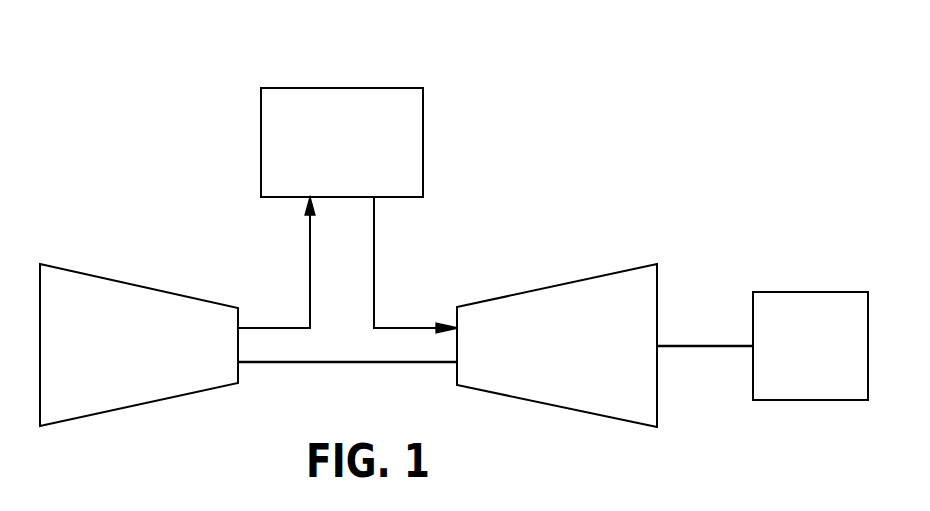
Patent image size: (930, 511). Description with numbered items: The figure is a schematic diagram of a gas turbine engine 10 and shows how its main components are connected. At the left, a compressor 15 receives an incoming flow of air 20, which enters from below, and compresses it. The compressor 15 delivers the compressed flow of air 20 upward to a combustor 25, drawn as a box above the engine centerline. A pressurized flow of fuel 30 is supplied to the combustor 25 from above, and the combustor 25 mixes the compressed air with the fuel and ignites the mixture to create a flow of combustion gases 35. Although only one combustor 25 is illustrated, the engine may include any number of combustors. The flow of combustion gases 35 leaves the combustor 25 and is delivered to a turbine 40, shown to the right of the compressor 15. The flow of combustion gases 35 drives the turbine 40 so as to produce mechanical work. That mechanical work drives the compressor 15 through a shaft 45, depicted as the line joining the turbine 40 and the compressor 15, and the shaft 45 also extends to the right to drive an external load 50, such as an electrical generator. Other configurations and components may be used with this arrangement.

The gas turbine engine 10 is at (122, 128).
The compressor 15 is at (156, 361).
The flow of air 20 is at (81, 418).
The combustor 25 is at (359, 158).
The flow of fuel 30 is at (291, 88).
The flow of combustion gases 35 is at (403, 328).
The turbine 40 is at (575, 362).
The shaft 45 is at (707, 340).
The external load 50 is at (829, 361).